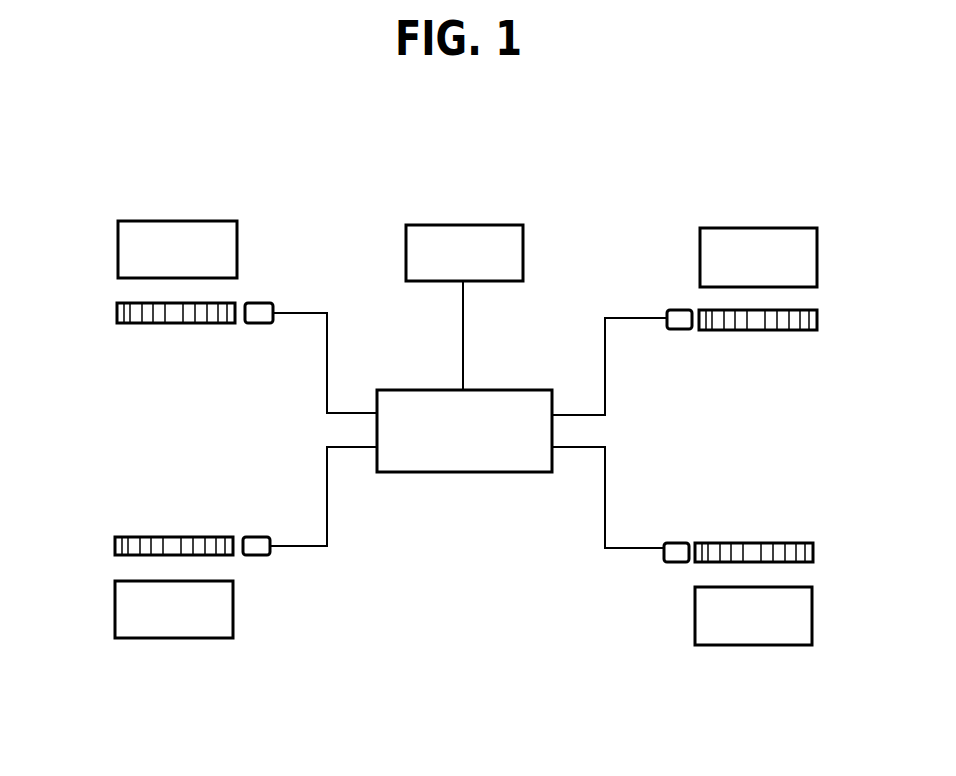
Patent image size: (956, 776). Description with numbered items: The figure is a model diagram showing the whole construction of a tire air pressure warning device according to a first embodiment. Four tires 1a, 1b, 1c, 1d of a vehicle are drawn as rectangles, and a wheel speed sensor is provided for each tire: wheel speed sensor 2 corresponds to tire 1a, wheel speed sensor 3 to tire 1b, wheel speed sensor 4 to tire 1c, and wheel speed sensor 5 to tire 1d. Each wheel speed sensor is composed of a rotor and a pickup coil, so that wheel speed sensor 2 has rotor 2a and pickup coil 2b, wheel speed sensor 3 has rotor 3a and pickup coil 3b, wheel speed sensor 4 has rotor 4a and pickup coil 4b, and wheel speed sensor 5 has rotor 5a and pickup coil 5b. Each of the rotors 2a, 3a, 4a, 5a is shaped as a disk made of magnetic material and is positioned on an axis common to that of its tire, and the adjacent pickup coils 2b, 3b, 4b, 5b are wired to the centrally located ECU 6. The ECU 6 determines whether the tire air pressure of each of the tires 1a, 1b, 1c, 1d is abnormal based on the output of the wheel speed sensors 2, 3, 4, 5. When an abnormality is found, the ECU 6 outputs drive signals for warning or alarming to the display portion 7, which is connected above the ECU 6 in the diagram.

The tire 1a is at (217, 230).
The tire 1b is at (203, 628).
The tire 1c is at (797, 237).
The tire 1d is at (763, 640).
The wheel speed sensor 2 is at (199, 364).
The rotor 2a is at (172, 323).
The pickup coil 2b is at (259, 341).
The wheel speed sensor 3 is at (197, 494).
The rotor 3a is at (170, 537).
The pickup coil 3b is at (254, 519).
The wheel speed sensor 4 is at (734, 369).
The rotor 4a is at (758, 348).
The pickup coil 4b is at (680, 330).
The wheel speed sensor 5 is at (731, 501).
The rotor 5a is at (754, 523).
The pickup coil 5b is at (675, 542).
The ECU 6 is at (528, 391).
The display portion 7 is at (527, 233).